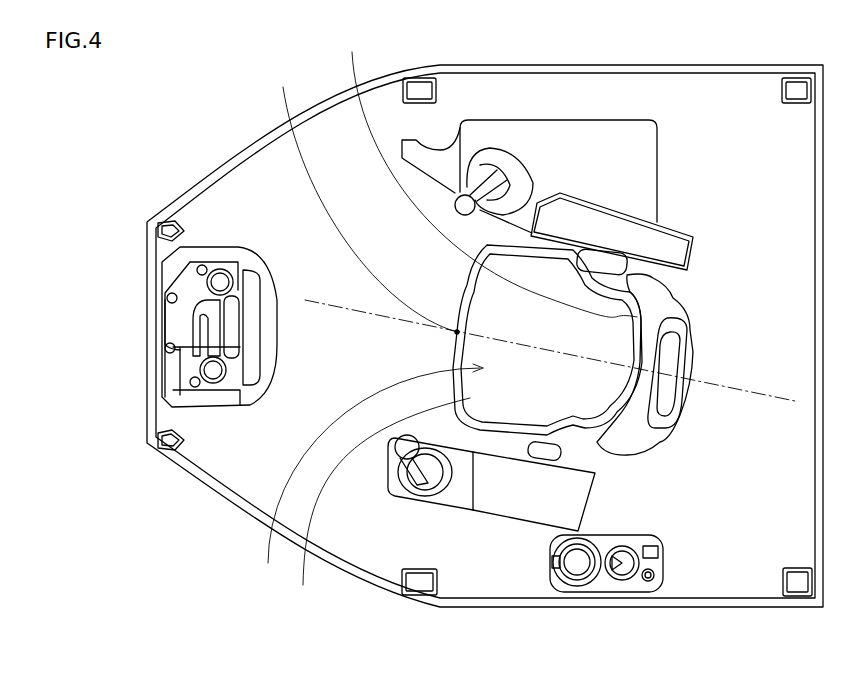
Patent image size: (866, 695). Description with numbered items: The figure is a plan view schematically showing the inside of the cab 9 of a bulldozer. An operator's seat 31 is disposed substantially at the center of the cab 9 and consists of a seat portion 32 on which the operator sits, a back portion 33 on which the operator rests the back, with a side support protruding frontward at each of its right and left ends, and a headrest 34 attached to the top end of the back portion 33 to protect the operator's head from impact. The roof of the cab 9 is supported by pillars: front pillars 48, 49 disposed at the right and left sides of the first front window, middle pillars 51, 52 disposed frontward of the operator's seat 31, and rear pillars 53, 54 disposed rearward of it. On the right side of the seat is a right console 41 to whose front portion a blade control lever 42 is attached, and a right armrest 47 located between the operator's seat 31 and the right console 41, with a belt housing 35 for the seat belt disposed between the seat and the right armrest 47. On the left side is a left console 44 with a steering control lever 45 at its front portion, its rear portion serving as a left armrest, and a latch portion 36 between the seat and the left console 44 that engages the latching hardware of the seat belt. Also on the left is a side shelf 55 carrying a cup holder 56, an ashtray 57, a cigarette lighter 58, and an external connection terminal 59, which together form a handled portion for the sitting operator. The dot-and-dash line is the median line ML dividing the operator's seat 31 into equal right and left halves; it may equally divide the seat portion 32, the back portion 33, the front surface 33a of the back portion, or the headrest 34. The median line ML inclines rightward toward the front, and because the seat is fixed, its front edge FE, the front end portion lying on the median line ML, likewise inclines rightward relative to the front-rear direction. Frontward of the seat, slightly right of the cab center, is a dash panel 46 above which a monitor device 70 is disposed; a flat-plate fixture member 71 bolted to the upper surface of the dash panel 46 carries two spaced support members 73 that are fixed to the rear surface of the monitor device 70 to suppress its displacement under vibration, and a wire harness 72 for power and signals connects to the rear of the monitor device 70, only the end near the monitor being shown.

The cab 9 is at (228, 80).
The operator's seat 31 is at (370, 474).
The seat portion 32 is at (380, 502).
The back portion 33 is at (605, 442).
The front surface of the back portion 33a is at (487, 175).
The headrest 34 is at (673, 403).
The belt housing 35 is at (622, 268).
The latch portion 36 is at (563, 458).
The right console 41 is at (623, 140).
The blade control lever 42 is at (460, 193).
The left console 44 is at (508, 497).
The steering control lever 45 is at (400, 447).
The dash panel 46 is at (228, 397).
The right armrest 47 is at (663, 243).
The front pillar 48 is at (160, 230).
The front pillar 49 is at (160, 455).
The middle pillar 51 is at (418, 90).
The middle pillar 52 is at (418, 585).
The rear pillar 53 is at (797, 90).
The rear pillar 54 is at (797, 585).
The side shelf 55 is at (600, 583).
The cup holder 56 is at (575, 578).
The ashtray 57 is at (625, 573).
The cigarette lighter 58 is at (660, 558).
The external connection terminal 59 is at (649, 578).
The monitor device 70 is at (231, 348).
The fixture member 71 is at (175, 338).
The wire harness 72 is at (210, 322).
The support members 73 is at (218, 284).
The front edge FE is at (365, 199).
The median line ML is at (750, 390).